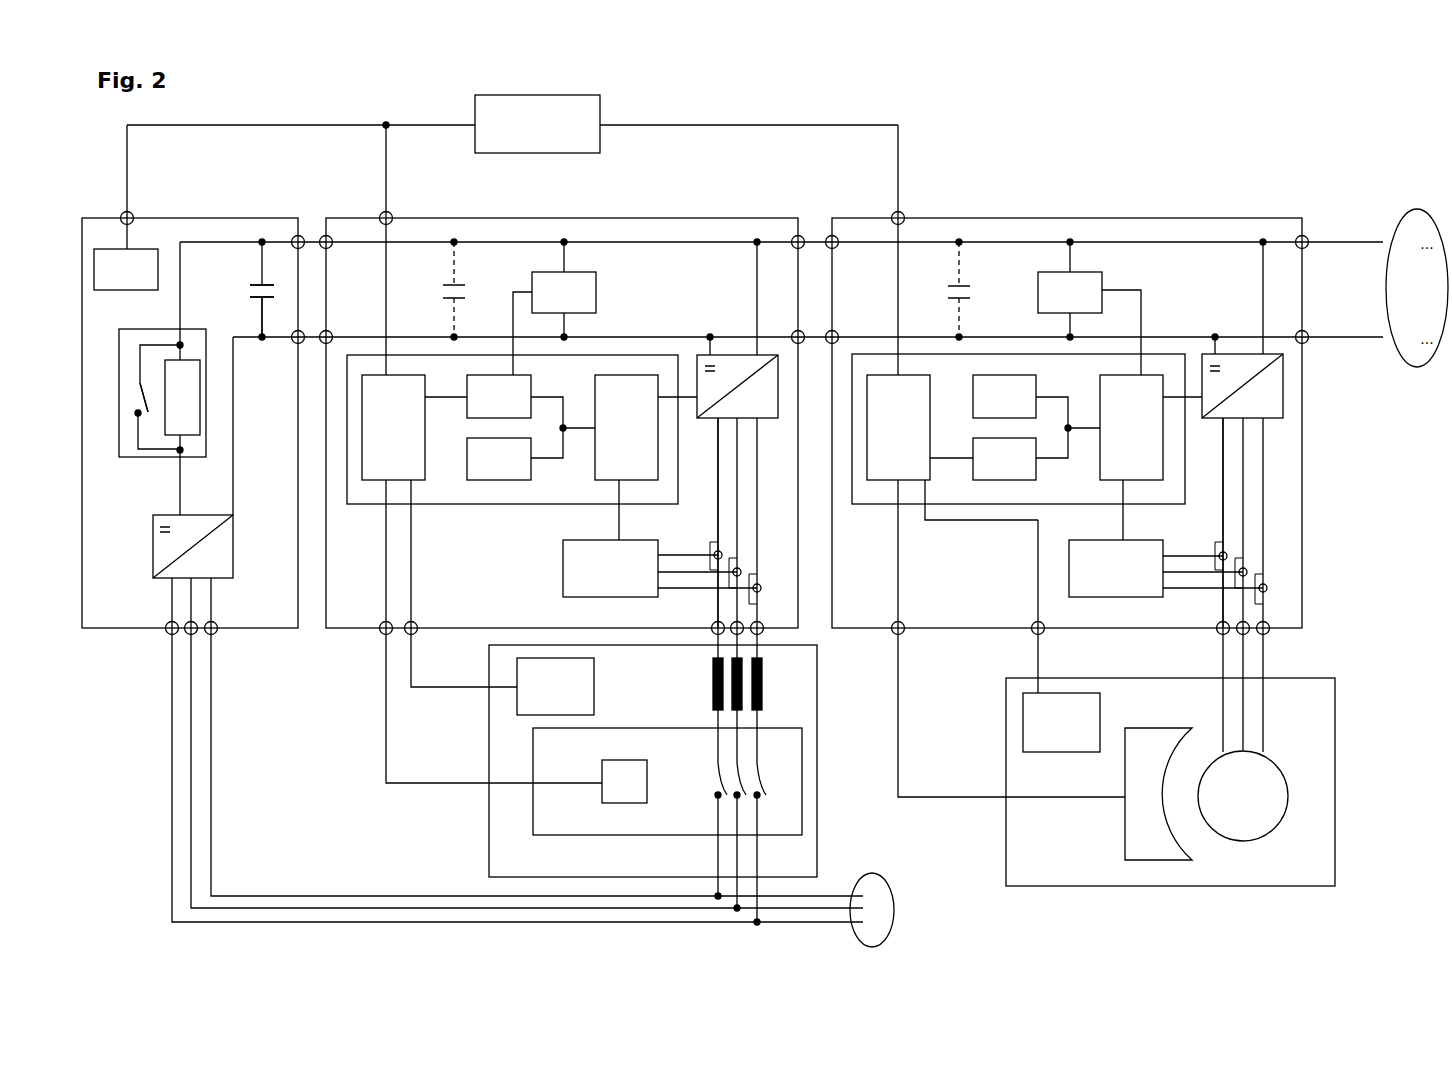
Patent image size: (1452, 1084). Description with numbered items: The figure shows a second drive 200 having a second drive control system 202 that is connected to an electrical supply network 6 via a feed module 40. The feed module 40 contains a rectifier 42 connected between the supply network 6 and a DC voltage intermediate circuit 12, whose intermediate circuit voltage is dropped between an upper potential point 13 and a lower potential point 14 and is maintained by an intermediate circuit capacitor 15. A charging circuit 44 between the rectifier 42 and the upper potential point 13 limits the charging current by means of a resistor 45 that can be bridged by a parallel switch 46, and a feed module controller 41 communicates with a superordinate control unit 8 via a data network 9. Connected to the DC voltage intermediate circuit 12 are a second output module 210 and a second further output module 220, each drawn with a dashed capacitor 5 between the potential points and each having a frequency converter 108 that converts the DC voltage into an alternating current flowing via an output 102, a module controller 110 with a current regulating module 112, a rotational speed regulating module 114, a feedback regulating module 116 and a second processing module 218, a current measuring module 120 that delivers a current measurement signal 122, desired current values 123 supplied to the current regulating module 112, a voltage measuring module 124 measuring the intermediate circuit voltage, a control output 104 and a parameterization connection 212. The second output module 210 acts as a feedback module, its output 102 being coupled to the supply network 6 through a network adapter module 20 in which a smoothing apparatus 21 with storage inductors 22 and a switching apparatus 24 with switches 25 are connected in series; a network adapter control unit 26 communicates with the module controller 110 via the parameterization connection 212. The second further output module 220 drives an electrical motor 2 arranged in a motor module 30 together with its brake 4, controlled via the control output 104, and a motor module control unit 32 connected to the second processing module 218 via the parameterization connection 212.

The electrical motor 2 is at (1282, 763).
The brake 4 is at (1125, 840).
The capacitor 5 is at (442, 290).
The electrical supply network 6 is at (888, 888).
The superordinate control unit 8 is at (537, 124).
The data network 9 is at (425, 123).
The DC voltage intermediate circuit 12 is at (1415, 367).
The upper potential point 13 is at (264, 241).
The lower potential point 14 is at (262, 340).
The intermediate circuit capacitor 15 is at (244, 292).
The network adapter module 20 is at (489, 850).
The smoothing apparatus 21 is at (708, 672).
The storage inductors 22 is at (716, 692).
The switching apparatus 24 is at (680, 835).
The switches 25 is at (725, 775).
The network adapter control unit 26 is at (555, 686).
The motor module 30 is at (1335, 785).
The motor module control unit 32 is at (1061, 722).
The feed module 40 is at (160, 218).
The feed module controller 41 is at (126, 269).
The rectifier 42 is at (235, 548).
The charging circuit 44 is at (158, 460).
The resistor 45 is at (182, 397).
The switch 46 is at (130, 400).
The output 102 is at (708, 622).
The control output 104 is at (383, 632).
The frequency converter 108 is at (740, 354).
The module controller 110 is at (452, 505).
The current regulating module 112 is at (879, 427).
The rotational speed regulating module 114 is at (751, 459).
The feedback regulating module 116 is at (751, 396).
The current measuring module 120 is at (913, 568).
The current measurement signal 122 is at (619, 522).
The desired current values 123 is at (568, 432).
The voltage measuring module 124 is at (827, 307).
The second drive 200 is at (1215, 115).
The second drive control system 202 is at (1325, 172).
The second output module 210 is at (645, 218).
The parameterization connection 212 is at (422, 628).
The second processing module 218 is at (646, 427).
The second further output module 220 is at (1095, 218).